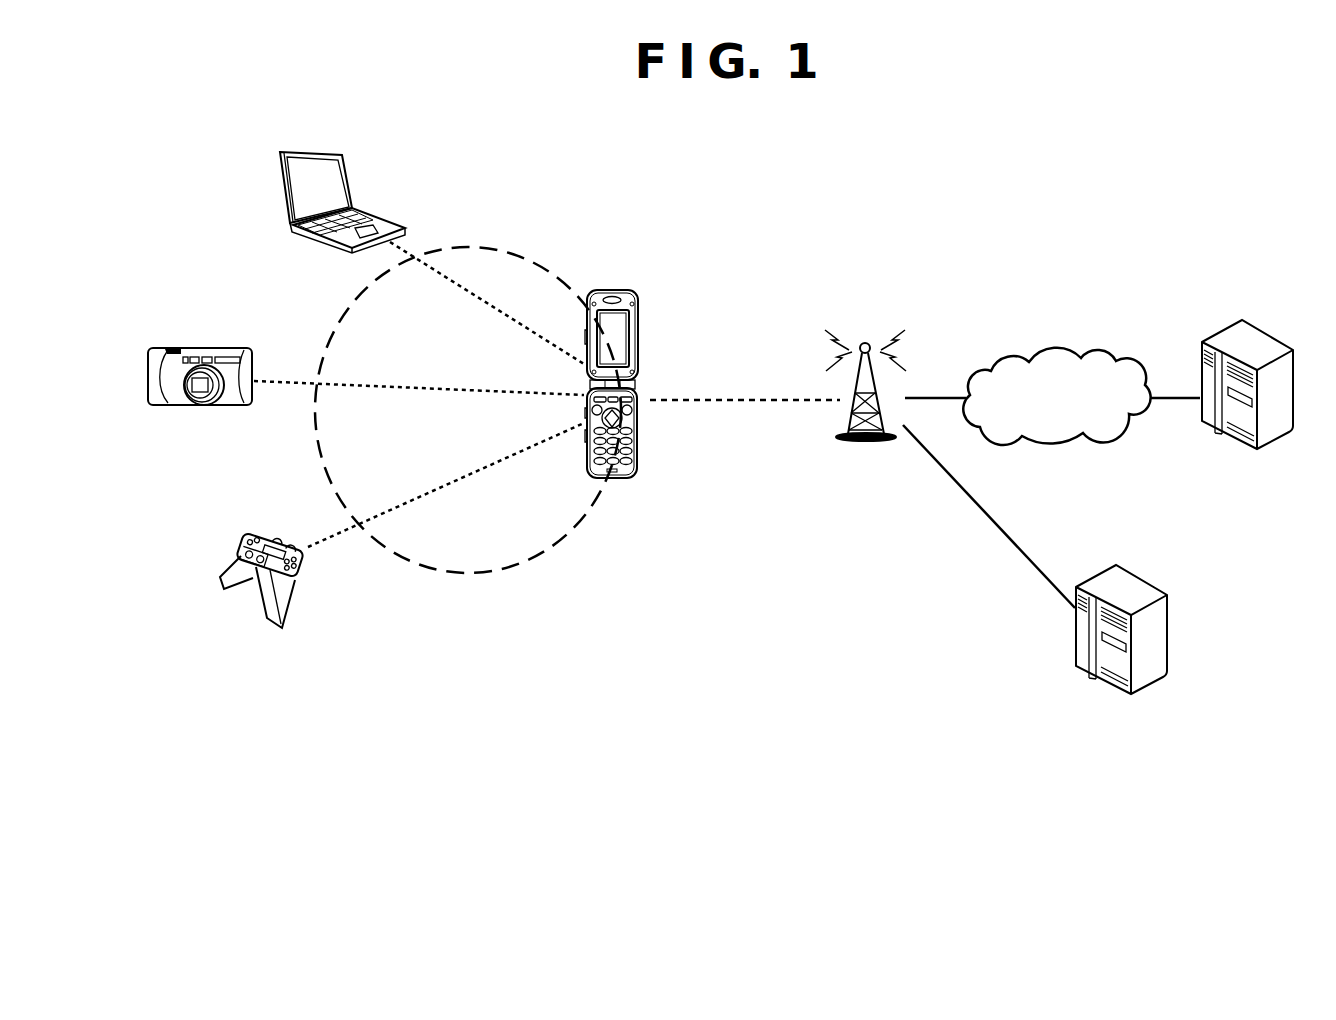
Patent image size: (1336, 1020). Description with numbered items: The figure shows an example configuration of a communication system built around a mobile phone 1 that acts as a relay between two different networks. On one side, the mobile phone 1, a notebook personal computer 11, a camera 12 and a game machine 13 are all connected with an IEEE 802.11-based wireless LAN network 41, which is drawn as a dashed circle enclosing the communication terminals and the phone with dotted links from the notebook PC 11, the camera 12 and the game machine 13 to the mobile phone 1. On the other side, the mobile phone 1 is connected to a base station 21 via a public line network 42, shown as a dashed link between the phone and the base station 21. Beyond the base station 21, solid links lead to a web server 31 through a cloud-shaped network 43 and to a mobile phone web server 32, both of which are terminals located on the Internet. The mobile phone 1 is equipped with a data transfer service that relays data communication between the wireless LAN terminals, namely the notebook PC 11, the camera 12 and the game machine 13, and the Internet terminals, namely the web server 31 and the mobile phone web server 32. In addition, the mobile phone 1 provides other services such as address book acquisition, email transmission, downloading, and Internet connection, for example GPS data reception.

The mobile phone 1 is at (609, 290).
The notebook personal computer 11 is at (302, 152).
The camera 12 is at (189, 348).
The game machine 13 is at (257, 530).
The base station 21 is at (865, 342).
The web server 31 is at (1224, 336).
The mobile phone web server 32 is at (1102, 580).
The wireless LAN network 41 is at (469, 246).
The public line network 42 is at (708, 399).
The network 43 is at (1001, 360).